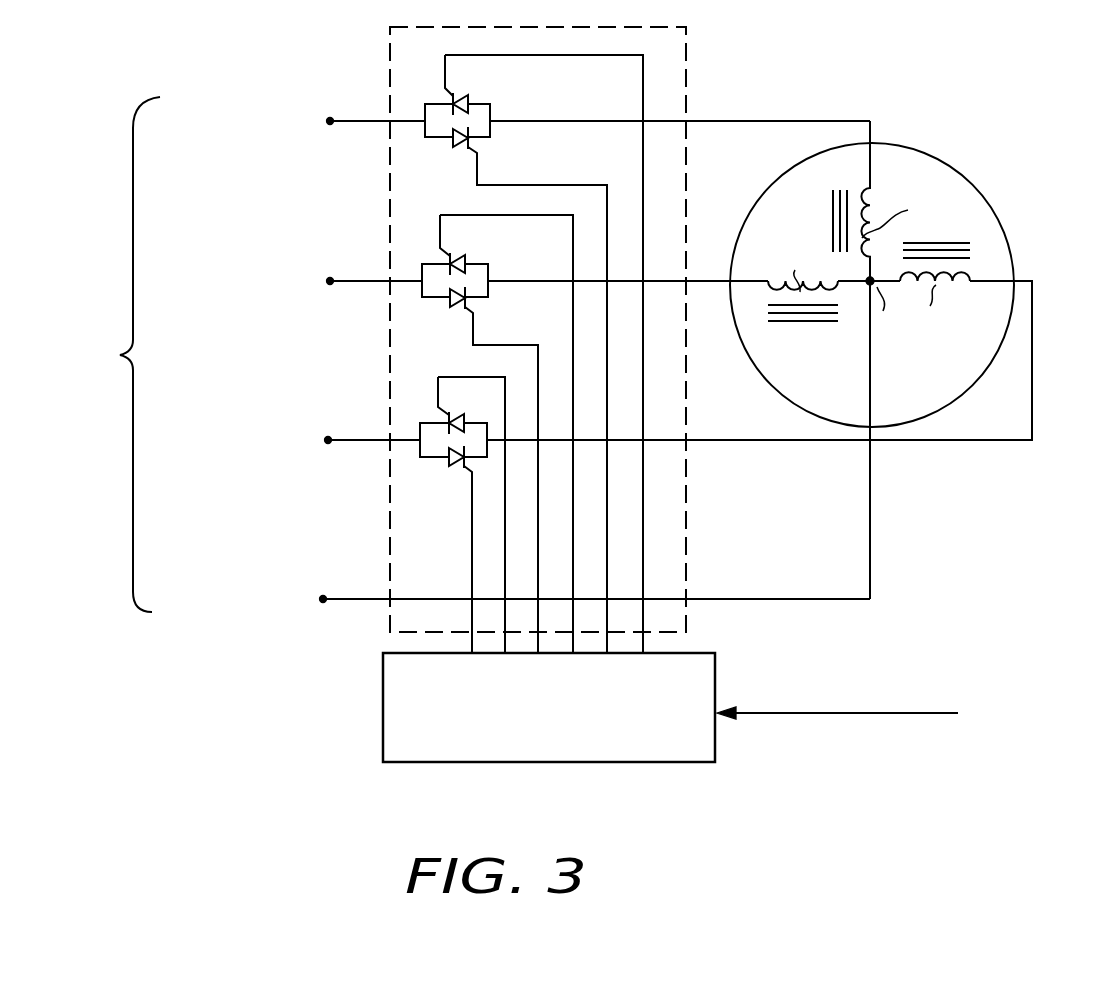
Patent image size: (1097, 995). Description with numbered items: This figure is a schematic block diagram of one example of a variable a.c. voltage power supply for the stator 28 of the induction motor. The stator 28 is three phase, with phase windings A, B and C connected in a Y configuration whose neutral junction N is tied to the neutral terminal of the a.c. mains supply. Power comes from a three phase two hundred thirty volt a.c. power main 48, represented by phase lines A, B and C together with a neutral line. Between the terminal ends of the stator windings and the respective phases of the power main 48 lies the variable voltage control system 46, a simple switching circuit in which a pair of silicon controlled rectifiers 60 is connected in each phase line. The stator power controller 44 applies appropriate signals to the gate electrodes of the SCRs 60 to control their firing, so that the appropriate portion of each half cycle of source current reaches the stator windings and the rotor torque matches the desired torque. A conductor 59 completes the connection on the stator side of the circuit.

The stator 28 is at (998, 216).
The stator power controller 44 is at (383, 686).
The motoring torque variable voltage control system 46 is at (688, 85).
The three phase a.c. power main 48 is at (542, 354).
The return conductor 59 is at (1000, 283).
The silicon controlled rectifiers 60 is at (466, 100).